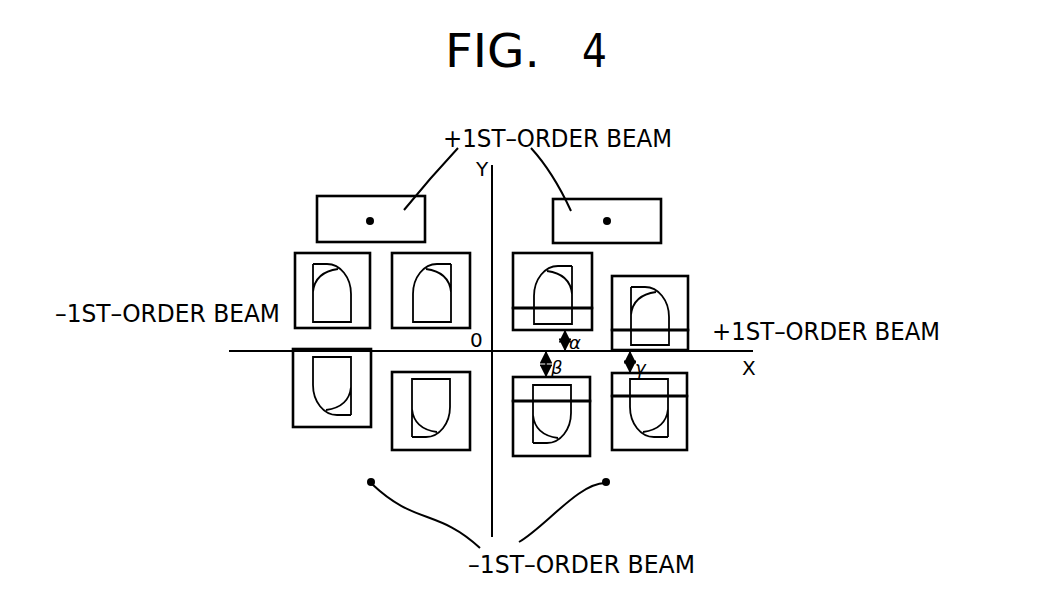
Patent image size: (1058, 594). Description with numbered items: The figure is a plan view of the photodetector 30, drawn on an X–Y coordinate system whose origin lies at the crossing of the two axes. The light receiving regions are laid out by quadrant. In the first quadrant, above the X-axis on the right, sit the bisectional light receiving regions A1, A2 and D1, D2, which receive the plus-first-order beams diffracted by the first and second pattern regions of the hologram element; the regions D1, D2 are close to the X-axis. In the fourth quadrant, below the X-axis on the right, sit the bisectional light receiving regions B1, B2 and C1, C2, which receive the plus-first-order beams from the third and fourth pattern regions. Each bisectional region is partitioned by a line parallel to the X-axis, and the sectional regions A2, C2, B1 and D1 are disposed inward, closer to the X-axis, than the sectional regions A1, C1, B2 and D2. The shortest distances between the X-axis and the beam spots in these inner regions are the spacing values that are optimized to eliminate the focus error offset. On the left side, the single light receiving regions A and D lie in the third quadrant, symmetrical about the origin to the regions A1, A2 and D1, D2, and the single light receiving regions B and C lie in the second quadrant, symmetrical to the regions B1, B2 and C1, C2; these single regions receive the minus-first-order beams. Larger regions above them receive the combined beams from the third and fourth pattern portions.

The photodetector 30 is at (262, 256).
The single light receiving region A is at (431, 411).
The single light receiving region B is at (332, 290).
The single light receiving region C is at (431, 290).
The single light receiving region D is at (332, 388).
The sectional light receiving region A1 is at (552, 288).
The sectional light receiving region A2 is at (552, 319).
The sectional light receiving region B1 is at (649, 384).
The sectional light receiving region B2 is at (649, 414).
The sectional light receiving region C1 is at (551, 420).
The sectional light receiving region C2 is at (551, 389).
The sectional light receiving region D1 is at (650, 340).
The sectional light receiving region D2 is at (650, 310).